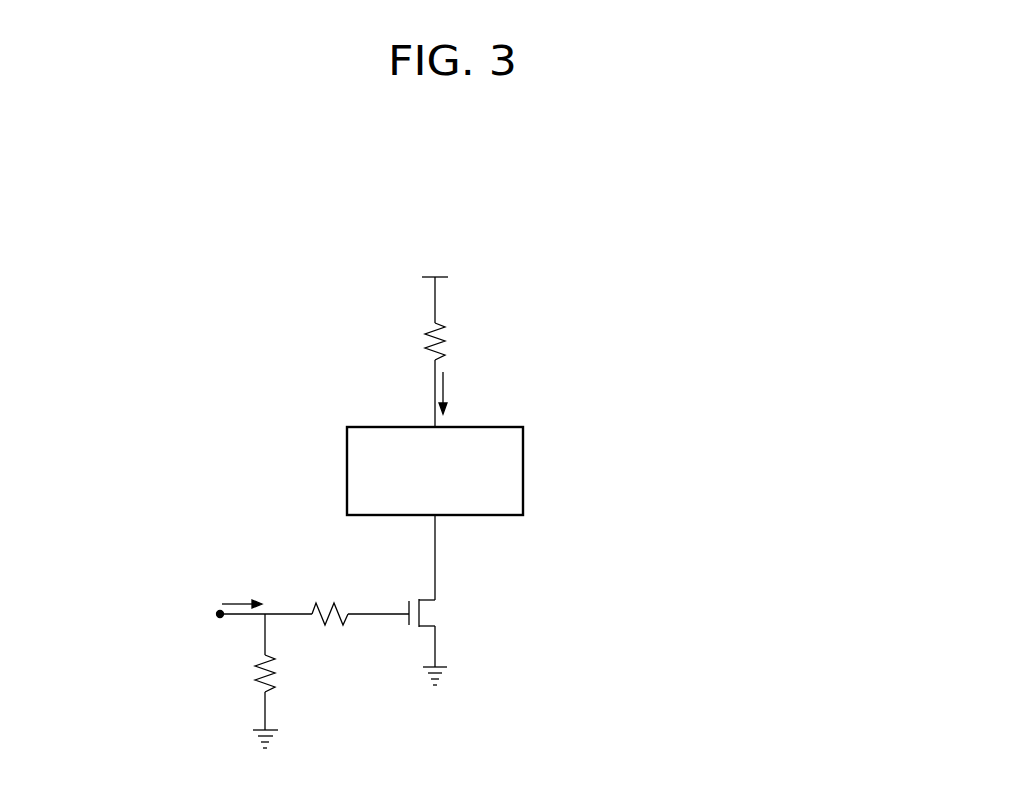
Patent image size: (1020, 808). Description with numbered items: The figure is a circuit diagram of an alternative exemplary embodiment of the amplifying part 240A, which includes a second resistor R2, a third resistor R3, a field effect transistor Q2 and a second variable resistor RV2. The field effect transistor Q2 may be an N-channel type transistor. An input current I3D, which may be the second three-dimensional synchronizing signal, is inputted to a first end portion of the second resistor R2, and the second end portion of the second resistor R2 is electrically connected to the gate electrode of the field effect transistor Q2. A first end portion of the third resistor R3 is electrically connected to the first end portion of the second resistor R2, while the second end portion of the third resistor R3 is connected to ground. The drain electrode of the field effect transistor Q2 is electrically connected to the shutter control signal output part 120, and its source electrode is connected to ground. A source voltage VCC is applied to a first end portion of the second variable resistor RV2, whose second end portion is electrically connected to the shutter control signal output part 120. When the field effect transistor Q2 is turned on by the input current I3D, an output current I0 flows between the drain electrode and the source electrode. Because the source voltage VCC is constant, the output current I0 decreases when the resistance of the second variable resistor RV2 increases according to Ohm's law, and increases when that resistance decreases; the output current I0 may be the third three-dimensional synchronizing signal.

The amplifying part 240A is at (418, 223).
The shutter control signal output part 120 is at (468, 427).
The second variable resistor RV2 is at (456, 341).
The second resistor R2 is at (330, 599).
The third resistor R3 is at (280, 672).
The field effect transistor Q2 is at (435, 613).
The source voltage VCC is at (435, 262).
The output current I0 is at (455, 393).
The input current I3D is at (241, 590).